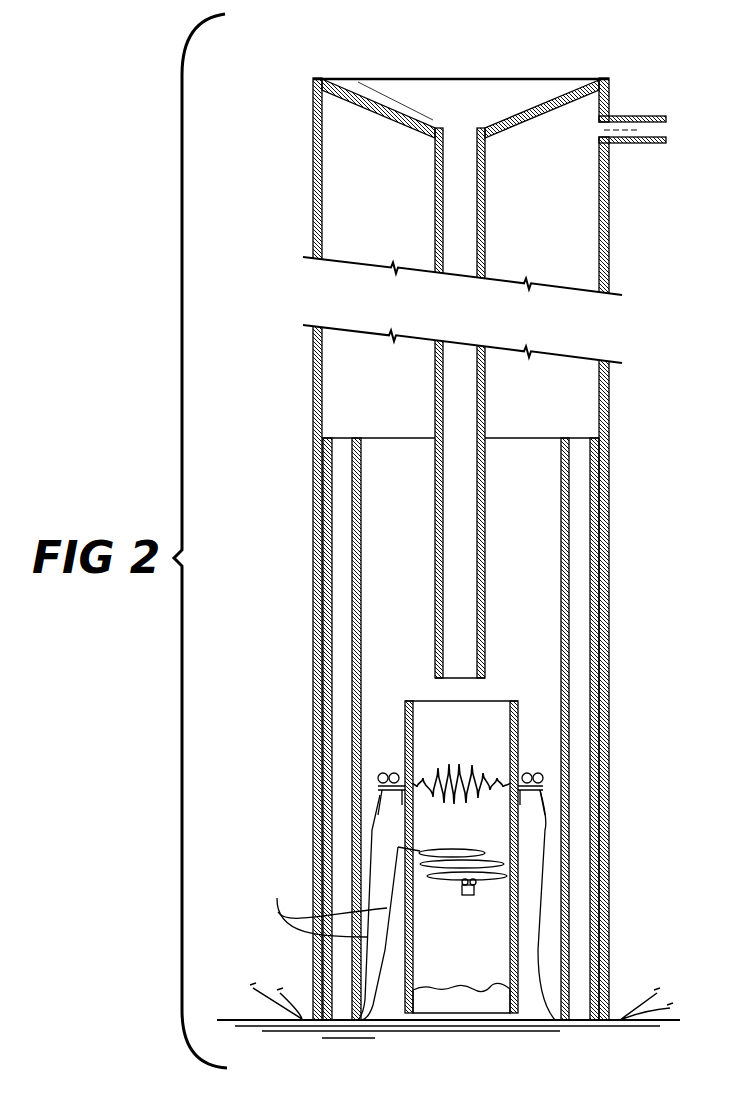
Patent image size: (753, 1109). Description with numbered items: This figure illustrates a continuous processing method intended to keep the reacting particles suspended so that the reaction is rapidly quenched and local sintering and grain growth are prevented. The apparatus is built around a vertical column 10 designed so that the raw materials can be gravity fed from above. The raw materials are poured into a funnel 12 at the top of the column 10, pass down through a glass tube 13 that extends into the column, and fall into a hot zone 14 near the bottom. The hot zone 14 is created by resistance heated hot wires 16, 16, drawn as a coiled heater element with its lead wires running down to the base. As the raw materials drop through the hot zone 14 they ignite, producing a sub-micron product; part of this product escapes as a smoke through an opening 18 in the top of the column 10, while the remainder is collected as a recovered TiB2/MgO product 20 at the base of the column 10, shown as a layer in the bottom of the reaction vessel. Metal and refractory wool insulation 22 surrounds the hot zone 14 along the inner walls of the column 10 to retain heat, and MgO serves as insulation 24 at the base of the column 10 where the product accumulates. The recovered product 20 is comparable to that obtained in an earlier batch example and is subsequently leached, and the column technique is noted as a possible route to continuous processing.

The column 10 is at (618, 400).
The funnel 12 is at (460, 89).
The glass tube 13 is at (485, 410).
The hot zone 14 is at (463, 948).
The resistance heated hot wires 16 is at (410, 905).
The opening 18 is at (665, 130).
The TiB2/MgO product 20 is at (460, 988).
The metal and refractory wool insulation 22 is at (585, 527).
The MgO insulation 24 is at (490, 1027).